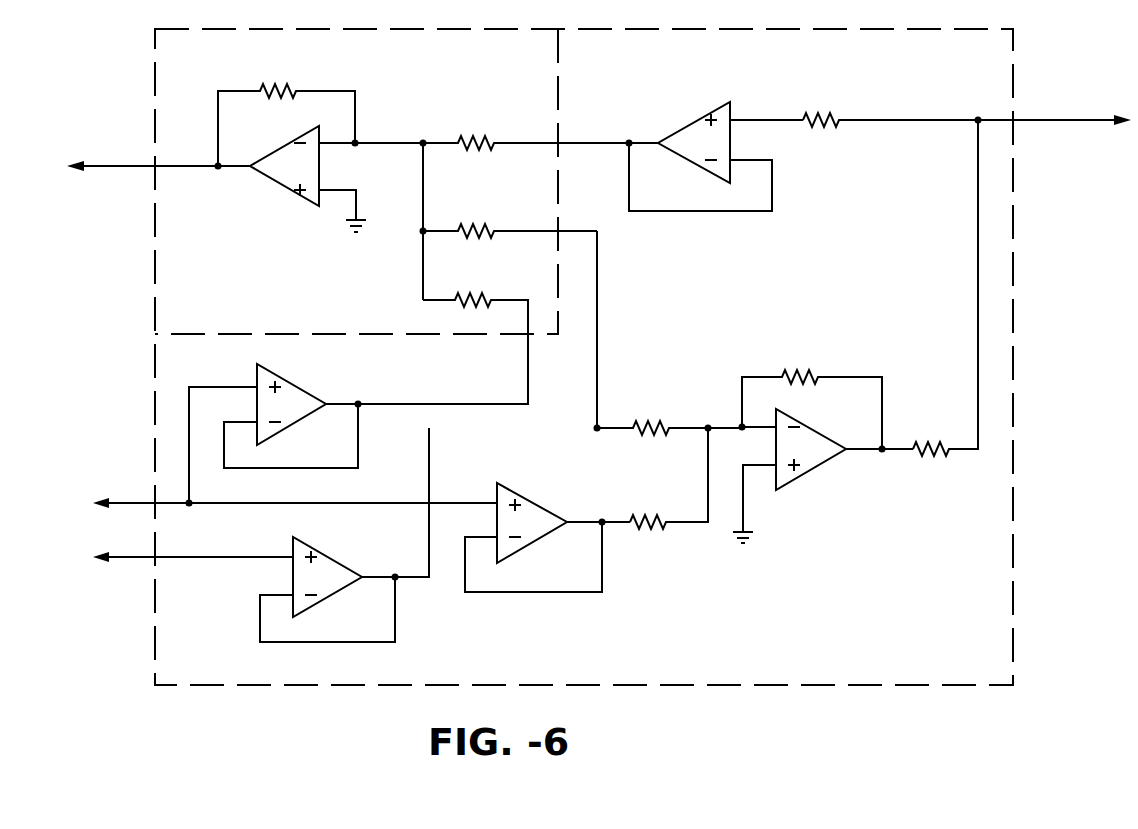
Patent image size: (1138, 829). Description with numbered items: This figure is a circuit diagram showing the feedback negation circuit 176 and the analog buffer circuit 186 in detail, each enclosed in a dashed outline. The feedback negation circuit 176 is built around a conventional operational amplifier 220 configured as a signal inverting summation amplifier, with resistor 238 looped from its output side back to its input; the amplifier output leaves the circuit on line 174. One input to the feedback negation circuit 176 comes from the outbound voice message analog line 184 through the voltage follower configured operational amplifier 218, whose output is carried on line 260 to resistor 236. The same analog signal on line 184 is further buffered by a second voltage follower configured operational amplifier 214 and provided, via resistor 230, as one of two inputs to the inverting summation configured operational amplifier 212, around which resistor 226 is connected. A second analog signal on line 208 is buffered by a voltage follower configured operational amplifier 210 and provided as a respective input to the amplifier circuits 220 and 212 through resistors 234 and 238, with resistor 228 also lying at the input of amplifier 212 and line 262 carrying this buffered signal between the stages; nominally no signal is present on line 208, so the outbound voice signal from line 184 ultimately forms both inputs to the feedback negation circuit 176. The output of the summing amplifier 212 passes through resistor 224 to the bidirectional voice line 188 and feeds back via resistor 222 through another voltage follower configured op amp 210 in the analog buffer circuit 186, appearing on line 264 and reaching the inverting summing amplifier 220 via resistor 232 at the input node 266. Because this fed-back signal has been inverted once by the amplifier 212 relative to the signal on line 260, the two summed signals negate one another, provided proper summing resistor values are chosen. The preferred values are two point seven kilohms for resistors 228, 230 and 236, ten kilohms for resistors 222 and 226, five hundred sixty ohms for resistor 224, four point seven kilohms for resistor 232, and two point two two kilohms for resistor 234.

The output signal line 174 is at (123, 165).
The feedback negation circuit 176 is at (515, 64).
The outbound voice message analog line 184 is at (124, 501).
The analog buffer circuit 186 is at (972, 56).
The bidirectional voice line 188 is at (1091, 118).
The line 208 is at (133, 560).
The voltage follower configured op amp 210 is at (704, 124).
The inverting summation configured operational amplifier 212 is at (812, 465).
The second voltage follower configured operational amplifier 214 is at (532, 507).
The voltage follower configured operational amplifier 218 is at (291, 398).
The operational amplifier 220 is at (281, 177).
The resistor 222 is at (825, 119).
The resistor 224 is at (950, 412).
The resistor 226 is at (797, 373).
The resistor 228 is at (645, 423).
The resistor 230 is at (648, 527).
The resistor 232 is at (480, 138).
The resistor 234 is at (478, 228).
The resistor 236 is at (462, 297).
The resistor 238 is at (276, 88).
The line 260 is at (528, 352).
The connection line 262 is at (597, 290).
The line 264 is at (573, 138).
The connection line 266 is at (378, 138).